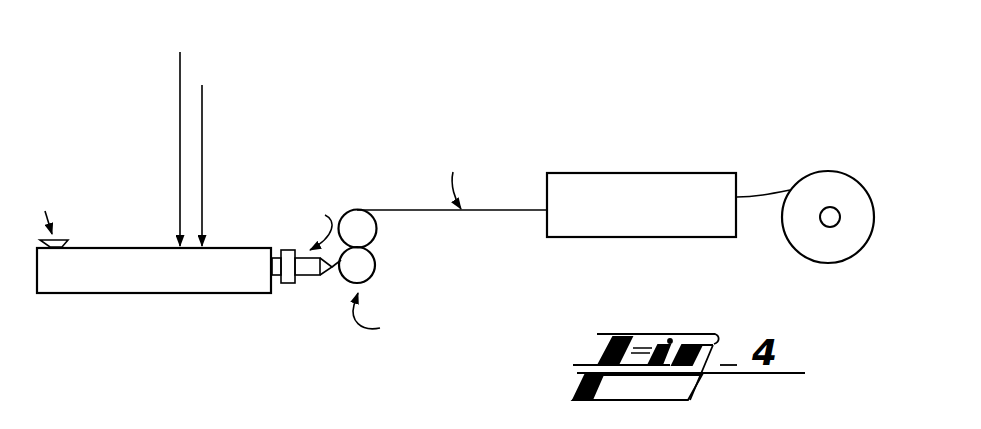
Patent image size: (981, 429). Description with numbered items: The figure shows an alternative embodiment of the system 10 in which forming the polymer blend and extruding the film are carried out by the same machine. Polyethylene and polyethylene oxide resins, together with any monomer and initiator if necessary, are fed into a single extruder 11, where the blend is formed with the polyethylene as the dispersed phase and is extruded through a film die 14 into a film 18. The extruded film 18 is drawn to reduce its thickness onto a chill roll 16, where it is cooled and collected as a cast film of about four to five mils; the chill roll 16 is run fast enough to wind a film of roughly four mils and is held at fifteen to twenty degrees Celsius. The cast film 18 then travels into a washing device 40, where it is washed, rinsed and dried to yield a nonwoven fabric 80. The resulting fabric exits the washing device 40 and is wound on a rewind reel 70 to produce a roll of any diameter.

The system 10 is at (473, 122).
The extruder 11 is at (135, 293).
The film die 14 is at (303, 276).
The chill roll 16 is at (375, 265).
The film 18 is at (425, 210).
The washing device 40 is at (667, 173).
The rewind reel 70 is at (820, 218).
The nonwoven fabric 80 is at (762, 190).